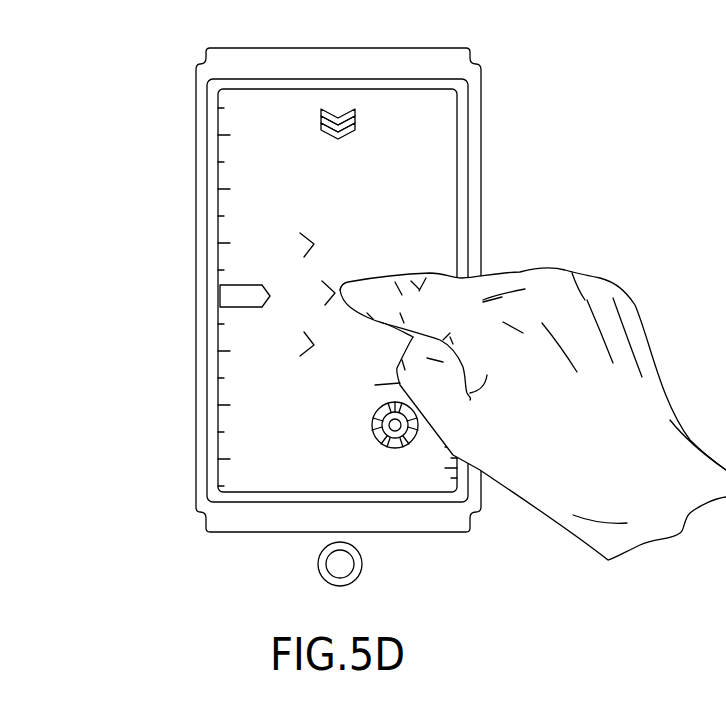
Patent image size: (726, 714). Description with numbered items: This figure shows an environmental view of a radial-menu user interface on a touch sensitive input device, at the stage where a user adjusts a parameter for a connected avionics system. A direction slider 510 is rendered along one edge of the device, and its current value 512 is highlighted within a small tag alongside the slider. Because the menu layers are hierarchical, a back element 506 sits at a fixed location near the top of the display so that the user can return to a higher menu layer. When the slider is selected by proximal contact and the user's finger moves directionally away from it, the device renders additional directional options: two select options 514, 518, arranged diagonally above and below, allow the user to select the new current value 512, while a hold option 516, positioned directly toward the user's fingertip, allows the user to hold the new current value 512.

The back element 506 is at (347, 136).
The direction slider 510 is at (226, 231).
The current value 512 is at (226, 294).
The select option 514 is at (313, 244).
The hold option 516 is at (337, 291).
The select option 518 is at (313, 344).